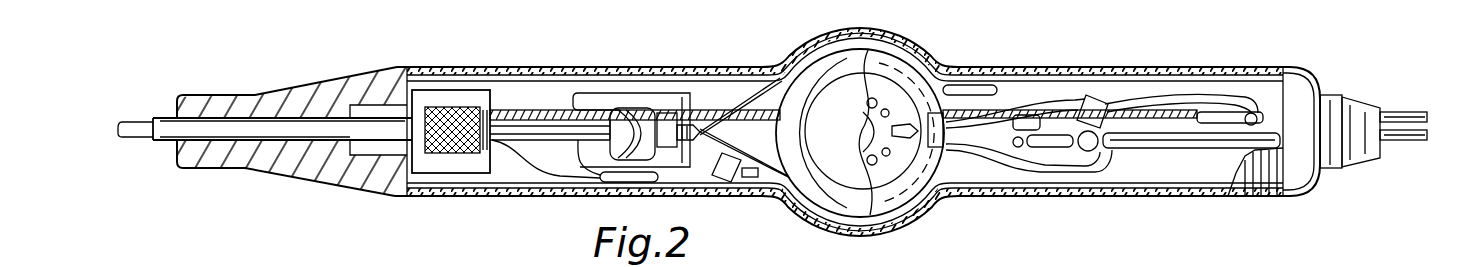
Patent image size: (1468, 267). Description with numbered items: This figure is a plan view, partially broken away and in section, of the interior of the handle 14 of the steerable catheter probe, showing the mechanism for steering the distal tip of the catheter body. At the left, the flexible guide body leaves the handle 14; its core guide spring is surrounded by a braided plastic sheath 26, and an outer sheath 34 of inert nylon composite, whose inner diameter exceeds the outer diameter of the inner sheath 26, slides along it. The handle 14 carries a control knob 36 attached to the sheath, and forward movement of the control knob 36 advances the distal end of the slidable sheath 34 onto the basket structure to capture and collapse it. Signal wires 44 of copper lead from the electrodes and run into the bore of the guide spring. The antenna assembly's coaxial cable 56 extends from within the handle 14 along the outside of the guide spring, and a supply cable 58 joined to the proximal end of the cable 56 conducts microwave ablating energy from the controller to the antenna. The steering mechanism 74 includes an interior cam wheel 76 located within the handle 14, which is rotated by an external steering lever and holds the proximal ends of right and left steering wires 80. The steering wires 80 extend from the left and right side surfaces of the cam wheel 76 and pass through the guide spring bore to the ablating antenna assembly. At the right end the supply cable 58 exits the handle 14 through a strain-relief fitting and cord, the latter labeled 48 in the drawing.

The handle 14 is at (1150, 67).
The braided sheath 26 is at (135, 122).
The outer sheath 34 is at (170, 139).
The control knob 36 is at (452, 108).
The signal wires 44 is at (580, 145).
The power cord 48 is at (1403, 141).
The coaxial cable 56 is at (547, 113).
The supply cable 58 is at (1402, 110).
The steering mechanism 74 is at (997, 40).
The cam wheel 76 is at (917, 77).
The steering wires 80 is at (758, 165).